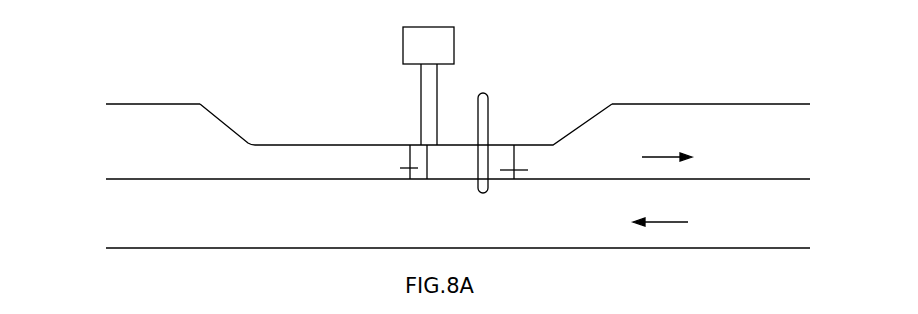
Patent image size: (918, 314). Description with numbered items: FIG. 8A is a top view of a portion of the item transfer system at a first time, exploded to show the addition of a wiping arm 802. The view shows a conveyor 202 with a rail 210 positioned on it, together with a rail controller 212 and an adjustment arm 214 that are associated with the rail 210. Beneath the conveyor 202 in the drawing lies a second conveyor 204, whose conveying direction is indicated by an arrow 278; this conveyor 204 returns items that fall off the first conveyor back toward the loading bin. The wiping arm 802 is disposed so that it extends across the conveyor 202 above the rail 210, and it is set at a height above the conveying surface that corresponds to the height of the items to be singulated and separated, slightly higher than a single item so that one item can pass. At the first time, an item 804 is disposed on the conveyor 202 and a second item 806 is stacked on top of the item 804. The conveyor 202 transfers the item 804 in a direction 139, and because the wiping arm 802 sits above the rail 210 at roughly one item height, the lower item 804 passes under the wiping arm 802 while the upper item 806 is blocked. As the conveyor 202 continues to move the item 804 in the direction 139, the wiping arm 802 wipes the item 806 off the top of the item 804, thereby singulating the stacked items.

The direction 139 is at (667, 145).
The conveyor 202 is at (730, 104).
The conveyor 204 is at (697, 248).
The rail 210 is at (589, 120).
The rail controller 212 is at (454, 43).
The adjustment arm 214 is at (421, 81).
The arrow 278 is at (660, 210).
The wiping arm 802 is at (488, 97).
The item 804 is at (500, 170).
The item 806 is at (412, 168).